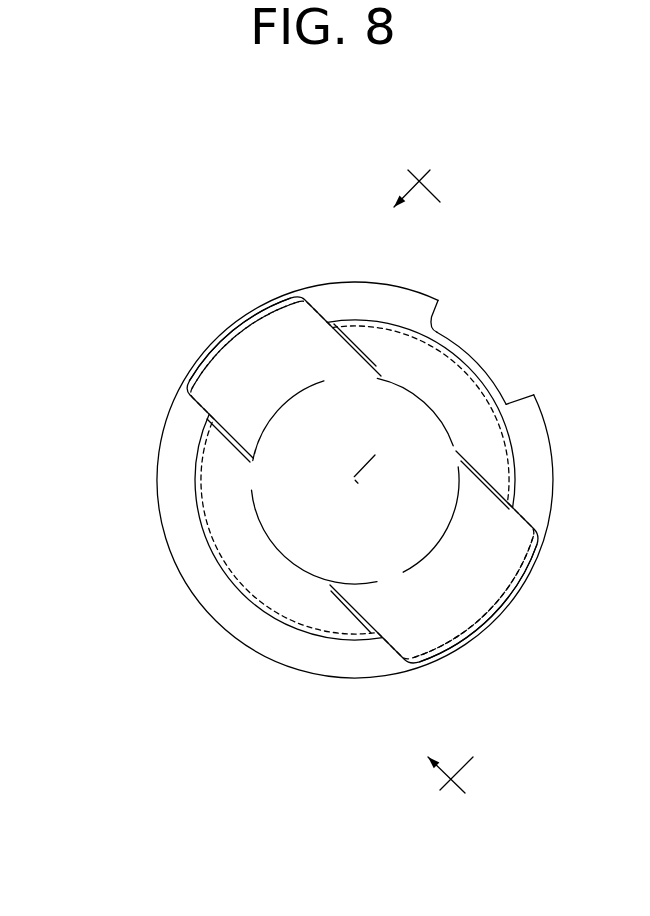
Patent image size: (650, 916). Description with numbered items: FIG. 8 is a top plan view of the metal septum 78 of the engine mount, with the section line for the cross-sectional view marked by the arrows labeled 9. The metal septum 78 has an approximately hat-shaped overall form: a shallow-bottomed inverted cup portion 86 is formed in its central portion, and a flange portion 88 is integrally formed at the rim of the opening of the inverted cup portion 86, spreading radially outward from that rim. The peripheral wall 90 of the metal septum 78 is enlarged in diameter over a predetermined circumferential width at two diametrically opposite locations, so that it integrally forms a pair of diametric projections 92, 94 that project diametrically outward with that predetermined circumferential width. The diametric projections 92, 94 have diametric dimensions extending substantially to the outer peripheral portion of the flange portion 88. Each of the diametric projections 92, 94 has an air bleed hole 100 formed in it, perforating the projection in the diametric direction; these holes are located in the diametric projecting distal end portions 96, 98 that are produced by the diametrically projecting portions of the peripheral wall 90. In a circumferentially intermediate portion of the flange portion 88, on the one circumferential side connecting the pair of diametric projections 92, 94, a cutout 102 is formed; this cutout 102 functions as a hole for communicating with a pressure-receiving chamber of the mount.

The metal septum 78 is at (120, 520).
The inverted cup portion 86 is at (512, 444).
The flange portion 88 is at (173, 467).
The peripheral wall 90 is at (238, 592).
The diametric projection 92 is at (498, 573).
The diametric projection 94 is at (278, 327).
The diametric projecting distal end portion 96 is at (463, 640).
The diametric projecting distal end portion 98 is at (237, 313).
The air bleed hole 100 is at (210, 342).
The cutout 102 is at (512, 315).
The section line 9- 9 is at (451, 472).